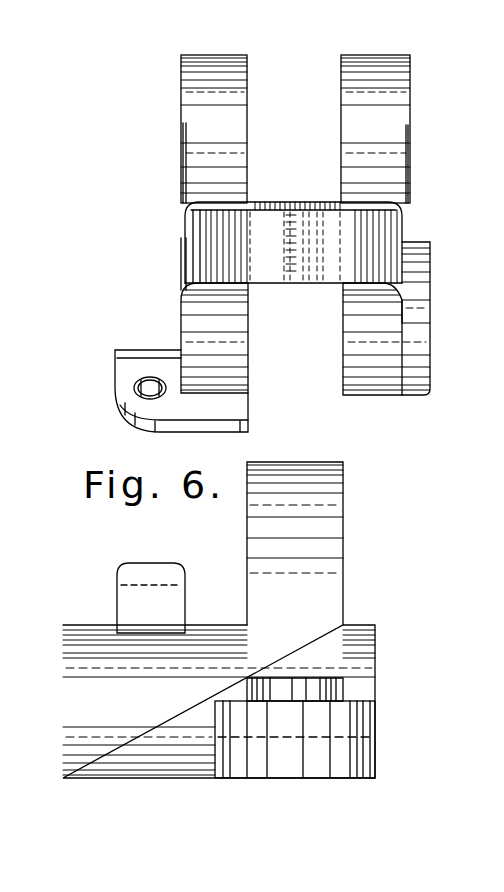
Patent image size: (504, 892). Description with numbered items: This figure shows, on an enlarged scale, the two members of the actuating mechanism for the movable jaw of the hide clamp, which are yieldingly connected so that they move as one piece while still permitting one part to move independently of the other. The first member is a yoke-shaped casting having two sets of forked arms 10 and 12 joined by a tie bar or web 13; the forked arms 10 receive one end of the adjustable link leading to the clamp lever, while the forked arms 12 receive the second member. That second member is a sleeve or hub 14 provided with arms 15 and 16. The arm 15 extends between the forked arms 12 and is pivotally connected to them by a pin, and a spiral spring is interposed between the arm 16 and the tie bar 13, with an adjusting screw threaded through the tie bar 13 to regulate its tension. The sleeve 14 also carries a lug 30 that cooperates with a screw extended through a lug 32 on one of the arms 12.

The forked arms 10 is at (238, 121).
The forked arms 12 is at (235, 343).
The tie bar or web 13 is at (353, 247).
The sleeve or hub 14 is at (372, 647).
The arm 15 is at (335, 545).
The arm 16 is at (360, 757).
The lug 30 is at (128, 572).
The lug 32 is at (122, 370).